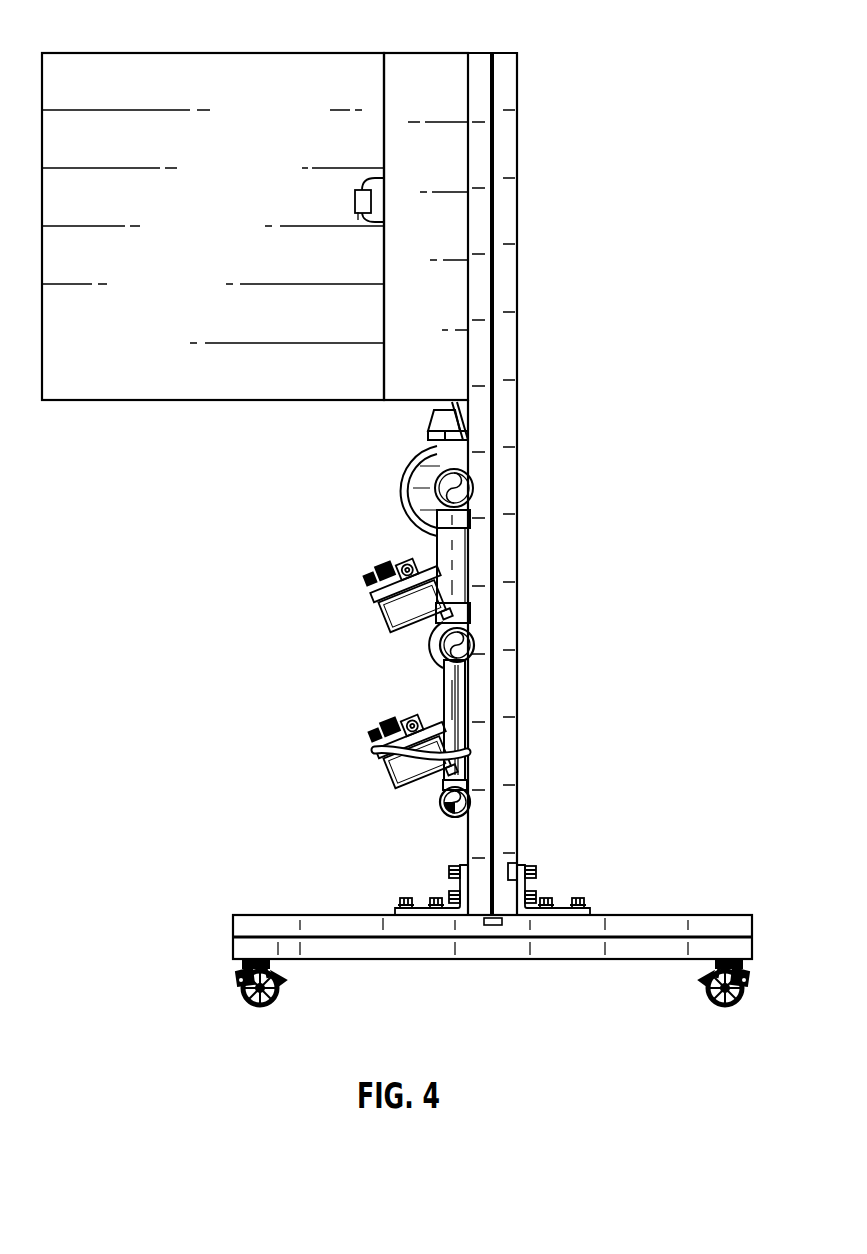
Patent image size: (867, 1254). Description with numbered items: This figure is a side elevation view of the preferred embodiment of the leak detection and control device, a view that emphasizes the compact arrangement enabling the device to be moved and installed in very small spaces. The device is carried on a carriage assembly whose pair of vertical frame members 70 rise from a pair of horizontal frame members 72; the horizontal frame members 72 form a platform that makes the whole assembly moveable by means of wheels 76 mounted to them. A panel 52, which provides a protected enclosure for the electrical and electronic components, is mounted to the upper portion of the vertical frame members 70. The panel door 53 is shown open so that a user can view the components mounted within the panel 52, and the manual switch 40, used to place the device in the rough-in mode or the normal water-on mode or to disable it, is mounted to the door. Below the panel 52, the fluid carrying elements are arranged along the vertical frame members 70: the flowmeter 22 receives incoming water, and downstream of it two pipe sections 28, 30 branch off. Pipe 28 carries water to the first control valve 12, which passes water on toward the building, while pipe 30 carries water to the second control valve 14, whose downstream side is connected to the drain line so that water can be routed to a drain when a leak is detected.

The first control valve 12 is at (407, 622).
The second control valve 14 is at (400, 795).
The flowmeter 22 is at (397, 489).
The pipe section 28 is at (453, 582).
The pipe section 30 is at (453, 733).
The manual switch 40 is at (355, 205).
The panel 52 is at (424, 65).
The panel door 53 is at (229, 240).
The vertical frame members 70 is at (515, 132).
The horizontal frame members 72 is at (510, 952).
The wheels 76 is at (258, 1004).